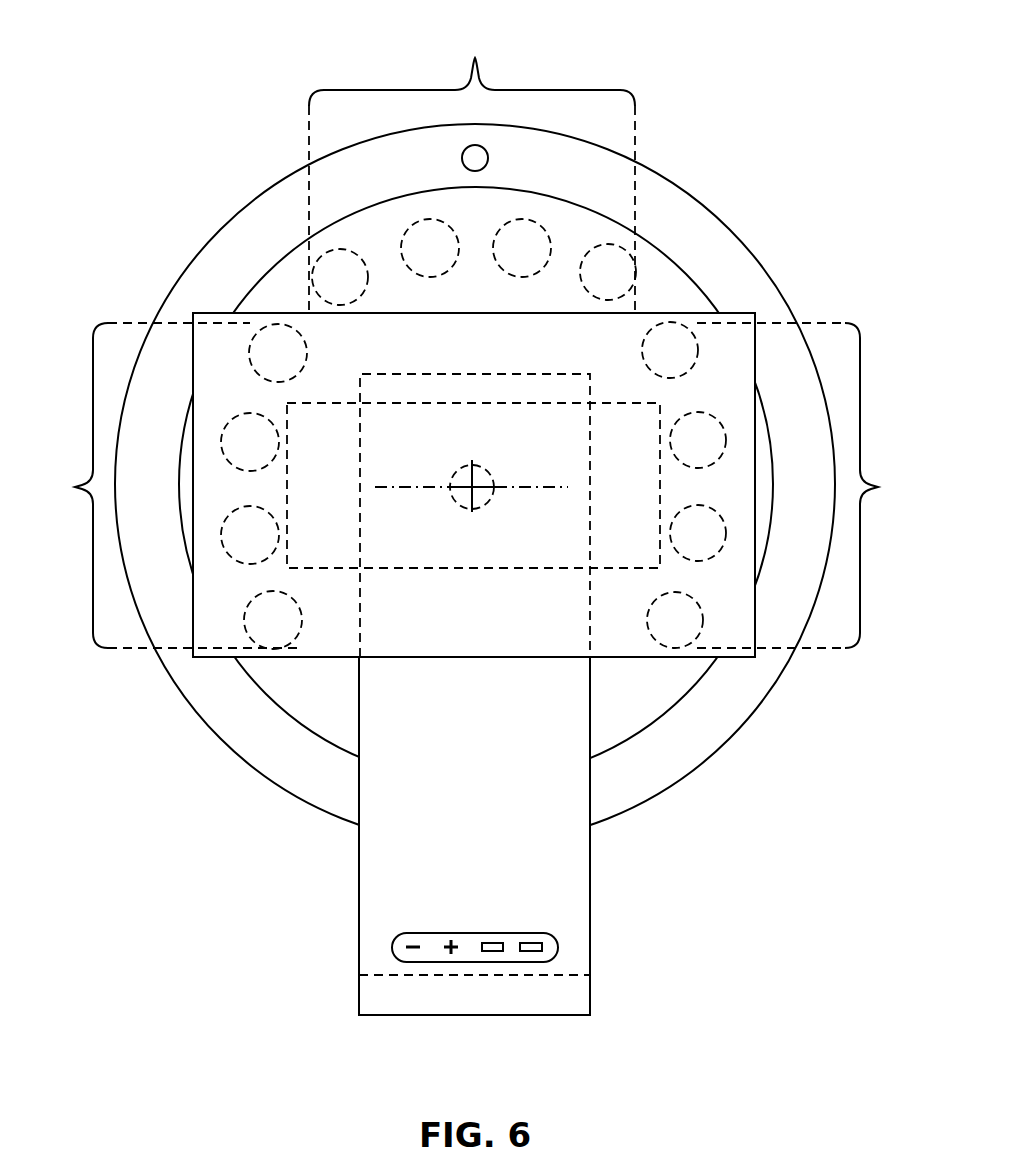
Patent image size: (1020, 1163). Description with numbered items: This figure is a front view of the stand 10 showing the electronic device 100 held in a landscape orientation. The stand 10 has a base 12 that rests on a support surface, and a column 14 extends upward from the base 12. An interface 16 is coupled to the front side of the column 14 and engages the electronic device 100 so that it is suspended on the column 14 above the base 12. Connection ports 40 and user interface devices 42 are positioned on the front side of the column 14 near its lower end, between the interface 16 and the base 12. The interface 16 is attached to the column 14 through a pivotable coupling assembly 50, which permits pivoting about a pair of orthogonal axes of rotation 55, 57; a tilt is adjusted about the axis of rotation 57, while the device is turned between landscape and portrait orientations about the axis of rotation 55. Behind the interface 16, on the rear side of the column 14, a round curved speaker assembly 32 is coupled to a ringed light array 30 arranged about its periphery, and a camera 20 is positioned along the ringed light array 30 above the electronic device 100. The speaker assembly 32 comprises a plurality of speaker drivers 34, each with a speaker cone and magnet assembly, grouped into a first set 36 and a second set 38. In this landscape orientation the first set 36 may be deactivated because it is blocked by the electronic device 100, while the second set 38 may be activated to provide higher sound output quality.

The stand 10 is at (226, 172).
The base 12 is at (570, 972).
The column 14 is at (590, 855).
The interface 16 is at (618, 570).
The camera 20 is at (488, 158).
The ringed light array 30 is at (723, 222).
The curved speaker assembly 32 is at (697, 282).
The speaker drivers 34 is at (452, 268).
The first set 36 is at (75, 487).
The second set 38 is at (472, 165).
The connection ports 40 is at (533, 954).
The user interface devices 42 is at (413, 954).
The pivotable coupling assembly 50 is at (483, 503).
The axis of rotation 55 is at (483, 472).
The axis of rotation 57 is at (412, 490).
The electronic device 100 is at (733, 658).